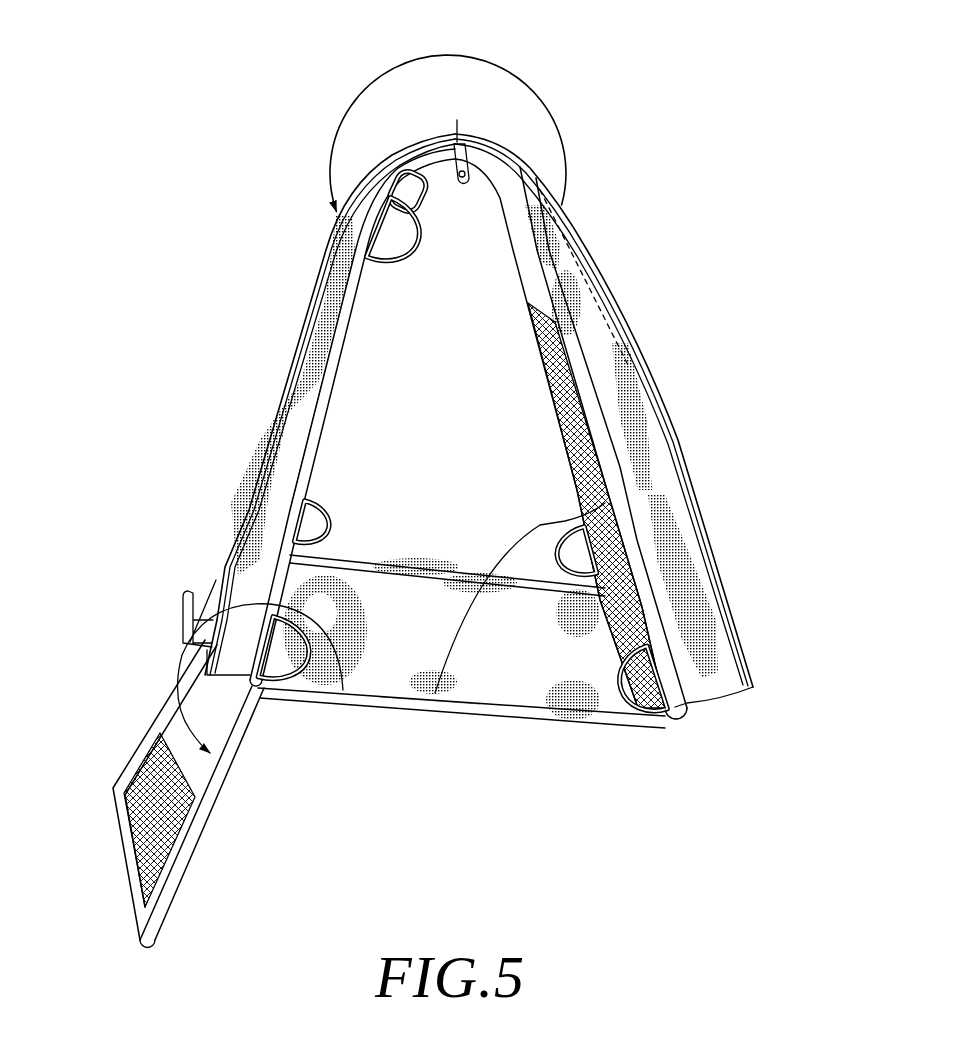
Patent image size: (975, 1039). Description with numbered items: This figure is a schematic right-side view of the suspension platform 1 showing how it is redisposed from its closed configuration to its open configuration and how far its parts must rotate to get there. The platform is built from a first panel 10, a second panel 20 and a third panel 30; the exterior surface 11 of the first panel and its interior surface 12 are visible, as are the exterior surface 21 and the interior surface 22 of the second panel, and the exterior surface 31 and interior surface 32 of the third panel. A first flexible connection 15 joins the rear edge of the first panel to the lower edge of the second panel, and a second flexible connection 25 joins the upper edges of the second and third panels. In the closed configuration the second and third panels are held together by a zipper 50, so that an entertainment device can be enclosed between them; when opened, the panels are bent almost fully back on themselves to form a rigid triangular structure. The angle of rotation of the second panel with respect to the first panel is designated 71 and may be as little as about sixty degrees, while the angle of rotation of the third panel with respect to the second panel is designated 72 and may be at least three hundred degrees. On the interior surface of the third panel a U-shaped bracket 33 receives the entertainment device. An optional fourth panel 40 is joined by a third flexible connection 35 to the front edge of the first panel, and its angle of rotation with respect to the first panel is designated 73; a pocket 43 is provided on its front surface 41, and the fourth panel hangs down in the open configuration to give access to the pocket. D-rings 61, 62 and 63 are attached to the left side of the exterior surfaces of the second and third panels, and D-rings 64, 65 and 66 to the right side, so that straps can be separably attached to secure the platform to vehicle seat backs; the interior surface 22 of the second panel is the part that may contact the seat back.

The suspension platform 1 is at (602, 98).
The first panel 10 is at (530, 721).
The exterior surface of the first panel 11 is at (423, 720).
The interior surface of panel 10 12 is at (485, 697).
The first flexible connection 15 is at (679, 727).
The second panel 20 is at (632, 488).
The exterior surface of the second panel 21 is at (637, 593).
The interior surface of panel 20 22 is at (722, 567).
The second flexible connection 25 is at (457, 118).
The third panel 30 is at (322, 381).
The exterior surface of panel 30 31 is at (335, 332).
The interior surface of the third panel 32 is at (288, 499).
The U-shaped bracket 33 is at (187, 588).
The third flexible connection 35 is at (293, 710).
The fourth panel 40 is at (182, 905).
The front surface of panel 40 41 is at (172, 712).
The pocket 43 is at (143, 777).
The zipper 50 is at (355, 183).
The D-ring 61 is at (553, 540).
The D-ring 62 is at (425, 185).
The D-ring 63 is at (345, 511).
The D-ring 64 is at (610, 680).
The D-ring 65 is at (410, 268).
The D-ring 66 is at (316, 662).
The angle of rotation of panel 20 with respect to panel 10 71 is at (605, 504).
The angle of rotation of panel 30 with respect to panel 20 72 is at (448, 120).
The angle of rotation of panel 40 with respect to panel 10 73 is at (261, 678).